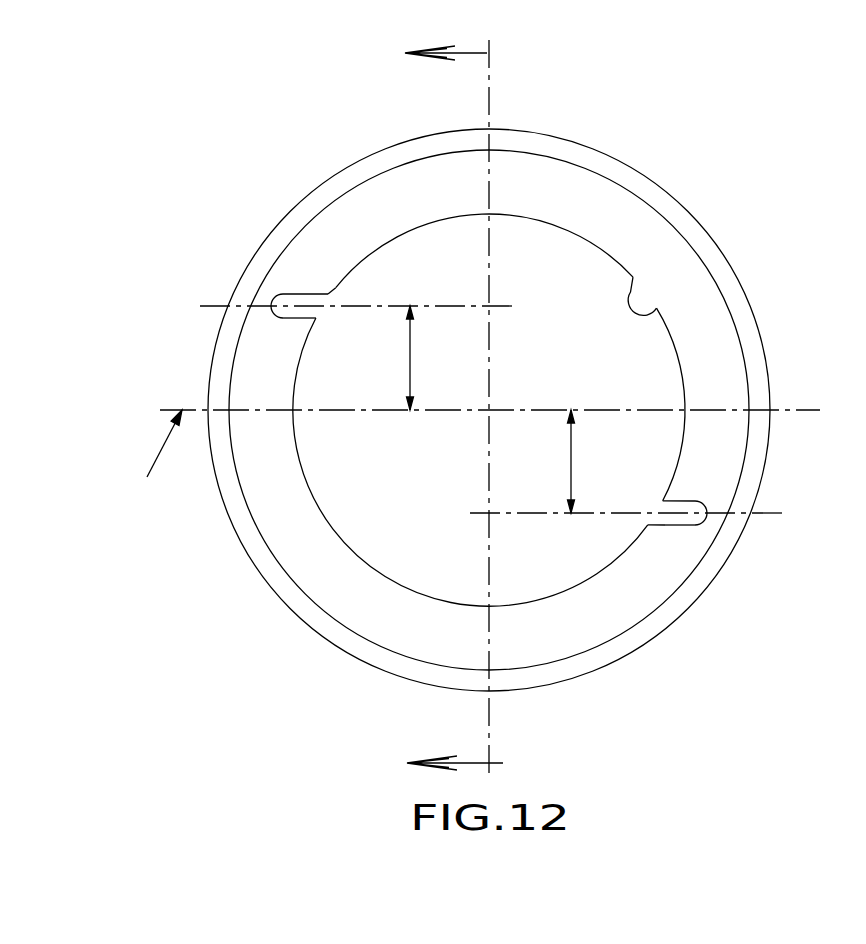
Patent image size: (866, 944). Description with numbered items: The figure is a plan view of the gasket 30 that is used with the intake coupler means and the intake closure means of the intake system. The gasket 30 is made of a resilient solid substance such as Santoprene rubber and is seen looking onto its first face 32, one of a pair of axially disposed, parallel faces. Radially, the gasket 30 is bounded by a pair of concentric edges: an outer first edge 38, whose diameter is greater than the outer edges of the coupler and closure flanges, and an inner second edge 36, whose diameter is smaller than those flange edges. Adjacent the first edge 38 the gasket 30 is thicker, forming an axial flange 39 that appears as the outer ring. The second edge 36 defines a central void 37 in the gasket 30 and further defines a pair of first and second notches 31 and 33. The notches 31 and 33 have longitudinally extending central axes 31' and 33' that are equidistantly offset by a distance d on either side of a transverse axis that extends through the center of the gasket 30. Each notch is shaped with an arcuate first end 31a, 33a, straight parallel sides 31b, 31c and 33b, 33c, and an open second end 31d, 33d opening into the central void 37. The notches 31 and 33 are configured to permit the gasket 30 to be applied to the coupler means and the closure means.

The gasket 30 is at (245, 158).
The first notch 31 is at (287, 272).
The central axis of first notch 31' is at (180, 270).
The arcuate first end of first notch 31a is at (273, 318).
The straight parallel side of first notch 31b is at (283, 291).
The straight parallel side of first notch 31c is at (287, 320).
The open second end of first notch 31d is at (337, 297).
The first face 32 is at (367, 622).
The second notch 33 is at (695, 505).
The central axis of second notch 33' is at (548, 637).
The arcuate first end of second notch 33a is at (707, 506).
The straight parallel side of second notch 33b is at (688, 495).
The straight parallel side of second notch 33c is at (668, 527).
The open second end of second notch 33d is at (643, 523).
The second edge 36 is at (633, 277).
The central void 37 is at (562, 330).
The first edge 38 is at (720, 247).
The axial flange 39 is at (410, 153).